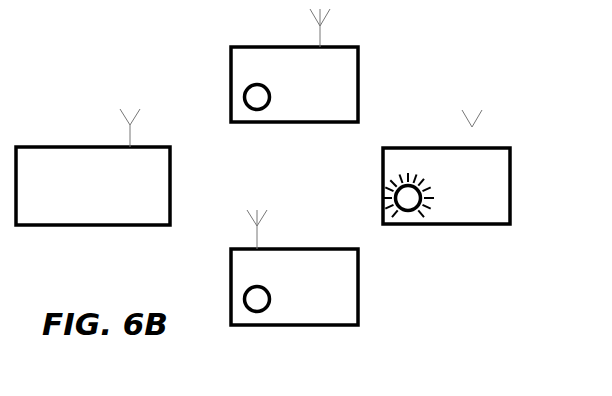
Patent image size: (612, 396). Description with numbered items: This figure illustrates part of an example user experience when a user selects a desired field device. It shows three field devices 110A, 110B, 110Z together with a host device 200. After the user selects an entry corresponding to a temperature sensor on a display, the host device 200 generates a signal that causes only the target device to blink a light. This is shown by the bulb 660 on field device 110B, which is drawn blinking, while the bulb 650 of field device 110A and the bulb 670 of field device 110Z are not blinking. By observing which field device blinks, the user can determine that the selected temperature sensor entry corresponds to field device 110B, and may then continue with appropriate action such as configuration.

The host device 200 is at (93, 167).
The field device 110A is at (358, 72).
The field device 110B is at (510, 173).
The field device 110Z is at (358, 294).
The bulb 650 is at (259, 117).
The bulb 660 is at (412, 219).
The bulb 670 is at (259, 319).